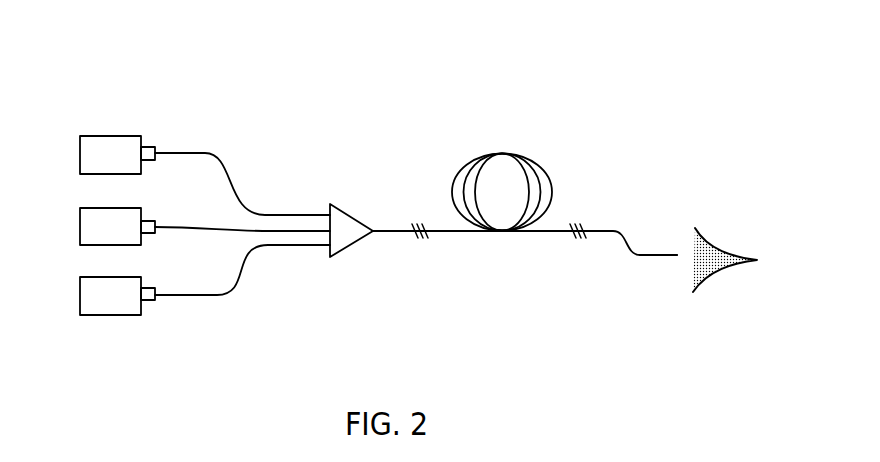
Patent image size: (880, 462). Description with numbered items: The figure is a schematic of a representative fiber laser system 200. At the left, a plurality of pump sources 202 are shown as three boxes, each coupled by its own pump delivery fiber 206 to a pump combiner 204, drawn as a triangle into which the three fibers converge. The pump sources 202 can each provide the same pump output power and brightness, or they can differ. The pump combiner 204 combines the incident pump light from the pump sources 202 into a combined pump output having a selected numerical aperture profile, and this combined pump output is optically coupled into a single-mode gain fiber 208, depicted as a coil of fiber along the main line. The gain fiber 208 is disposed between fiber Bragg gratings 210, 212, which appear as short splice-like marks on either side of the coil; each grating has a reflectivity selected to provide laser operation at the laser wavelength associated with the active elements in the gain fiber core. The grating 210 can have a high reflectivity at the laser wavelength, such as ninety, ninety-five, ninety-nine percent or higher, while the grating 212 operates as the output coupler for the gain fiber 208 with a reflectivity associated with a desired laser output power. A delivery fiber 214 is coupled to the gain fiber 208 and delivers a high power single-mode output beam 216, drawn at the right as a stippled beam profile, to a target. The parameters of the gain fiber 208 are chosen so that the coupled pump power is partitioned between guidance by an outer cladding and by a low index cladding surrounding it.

The fiber laser system 200 is at (562, 332).
The pump sources 202 is at (117, 225).
The pump combiner 204 is at (343, 218).
The pump delivery fibers 206 is at (208, 152).
The single-mode gain fiber 208 is at (502, 154).
The fiber Bragg grating 210 is at (418, 225).
The fiber Bragg grating 212 is at (577, 227).
The delivery fiber 214 is at (640, 253).
The single-mode output beam 216 is at (722, 252).